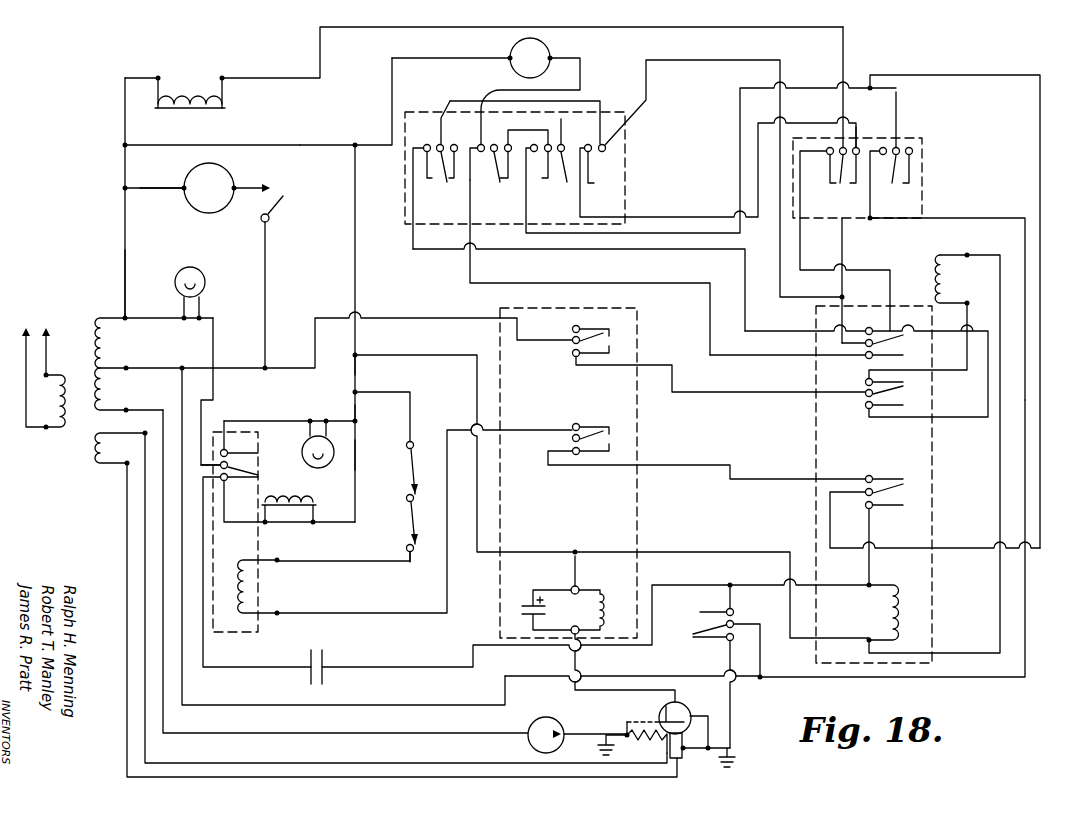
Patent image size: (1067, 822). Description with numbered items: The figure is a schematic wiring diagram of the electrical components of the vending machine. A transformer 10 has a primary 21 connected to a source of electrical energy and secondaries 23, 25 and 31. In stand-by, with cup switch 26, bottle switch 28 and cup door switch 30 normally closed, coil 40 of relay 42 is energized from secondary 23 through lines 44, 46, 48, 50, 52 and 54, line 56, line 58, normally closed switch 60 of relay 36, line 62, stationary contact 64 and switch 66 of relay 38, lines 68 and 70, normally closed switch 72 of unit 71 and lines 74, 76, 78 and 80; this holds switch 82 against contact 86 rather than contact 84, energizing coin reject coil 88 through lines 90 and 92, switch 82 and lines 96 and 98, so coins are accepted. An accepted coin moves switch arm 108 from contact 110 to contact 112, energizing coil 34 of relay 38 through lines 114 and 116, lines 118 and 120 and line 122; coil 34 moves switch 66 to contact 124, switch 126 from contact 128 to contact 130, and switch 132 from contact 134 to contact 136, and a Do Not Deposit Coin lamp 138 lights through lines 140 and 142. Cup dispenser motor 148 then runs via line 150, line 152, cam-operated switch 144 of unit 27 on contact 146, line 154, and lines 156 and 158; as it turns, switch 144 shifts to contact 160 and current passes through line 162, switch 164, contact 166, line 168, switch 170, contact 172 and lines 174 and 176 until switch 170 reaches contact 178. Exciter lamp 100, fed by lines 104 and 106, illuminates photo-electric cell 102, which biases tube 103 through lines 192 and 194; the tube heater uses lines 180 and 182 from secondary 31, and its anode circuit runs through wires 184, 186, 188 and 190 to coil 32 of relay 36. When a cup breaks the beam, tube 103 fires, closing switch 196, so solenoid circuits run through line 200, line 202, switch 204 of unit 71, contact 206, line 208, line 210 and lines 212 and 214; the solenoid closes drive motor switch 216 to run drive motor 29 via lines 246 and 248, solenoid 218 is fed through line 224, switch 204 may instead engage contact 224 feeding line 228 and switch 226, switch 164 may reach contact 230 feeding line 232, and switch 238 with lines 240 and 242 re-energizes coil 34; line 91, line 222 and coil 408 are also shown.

The power supply 10 is at (73, 351).
The primary 21 is at (54, 404).
The secondary 23 is at (106, 344).
The secondary 25 is at (106, 390).
The cup switch 26 is at (406, 436).
The unit 27 is at (515, 168).
The bottle switch 28 is at (406, 489).
The drive motor 29 is at (228, 170).
The cup door switch 30 is at (406, 535).
The secondary 31 is at (106, 444).
The coil 32 is at (590, 606).
The coil 34 is at (890, 614).
The relay 36 is at (568, 473).
The relay 38 is at (874, 484).
The coil 40 is at (240, 586).
The relay 42 is at (235, 532).
The line 44 is at (125, 258).
The line 46 is at (125, 160).
The line 48 is at (276, 148).
The line 50 is at (356, 234).
The line 52 is at (358, 374).
The line 54 is at (380, 392).
The line 56 is at (324, 562).
The line 58 is at (340, 612).
The switch 60 is at (596, 426).
The line 62 is at (664, 468).
The stationary contact 64 is at (906, 480).
The switch 66 is at (906, 494).
The line 68 is at (944, 548).
The line 70 is at (898, 118).
The unit 71 is at (857, 178).
The switch 72 is at (916, 164).
The line 74 is at (870, 208).
The line 76 is at (972, 218).
The line 78 is at (630, 676).
The line 80 is at (158, 366).
The switch 82 is at (262, 466).
The contact 84 is at (262, 452).
The contact 86 is at (262, 478).
The coil 88 is at (288, 507).
The line 90 is at (358, 412).
The conductor 91 is at (228, 520).
The line 92 is at (358, 472).
The line 96 is at (214, 390).
The line 98 is at (202, 366).
The exciter lamp 100 is at (195, 264).
The photo-electric cell 102 is at (556, 720).
The tube 103 is at (688, 708).
The line 104 is at (160, 308).
The line 106 is at (213, 334).
The switch arm 108 is at (736, 612).
The contact 110 is at (696, 640).
The contact 112 is at (698, 612).
The line 114 is at (436, 354).
The line 116 is at (696, 552).
The line 118 is at (852, 584).
The line 120 is at (728, 586).
The line 122 is at (762, 650).
The contact 124 is at (912, 506).
The switch 126 is at (896, 396).
The contact 128 is at (904, 382).
The contact 130 is at (920, 406).
The switch 132 is at (906, 344).
The contact 134 is at (884, 330).
The contact 136 is at (906, 356).
The Do Not Deposit Coin lamp 138 is at (326, 466).
The line 140 is at (342, 420).
The line 142 is at (270, 420).
The cam-operated switch 144 is at (474, 174).
The contact 146 is at (486, 196).
The cup dispenser motor 148 is at (549, 50).
The line 150 is at (455, 58).
The line 152 is at (582, 76).
The line 154 is at (624, 284).
The line 156 is at (842, 310).
The line 158 is at (846, 244).
The contact 160 is at (502, 174).
The line 162 is at (542, 126).
The switch 164 is at (538, 186).
The contact 166 is at (564, 174).
The line 168 is at (564, 132).
The switch 170 is at (429, 174).
The contact 172 is at (446, 174).
The line 174 is at (456, 101).
The line 176 is at (786, 274).
The contact 178 is at (418, 172).
The line 180 is at (346, 762).
The line 182 is at (404, 776).
The wire 184 is at (731, 722).
The wire 186 is at (686, 756).
The wire 188 is at (610, 694).
The wire 190 is at (576, 572).
The line 192 is at (590, 742).
The line 194 is at (194, 733).
The switch 196 is at (612, 350).
The line 200 is at (125, 126).
The line 202 is at (300, 76).
The switch 204 is at (838, 168).
The contact 206 is at (836, 184).
The line 208 is at (876, 270).
The line 210 is at (760, 394).
The line 212 is at (402, 318).
The line 214 is at (248, 360).
The drive motor switch 216 is at (286, 198).
The solenoid 218 is at (948, 280).
The conductor 222 is at (266, 292).
The line 224 is at (856, 182).
The switch 226 is at (606, 158).
The line 228 is at (636, 216).
The contact 230 is at (536, 198).
The line 232 is at (740, 150).
The switch 238 is at (330, 664).
The line 240 is at (410, 666).
The line 242 is at (232, 668).
The line 246 is at (146, 190).
The line 248 is at (1000, 510).
The coil 408 is at (188, 110).